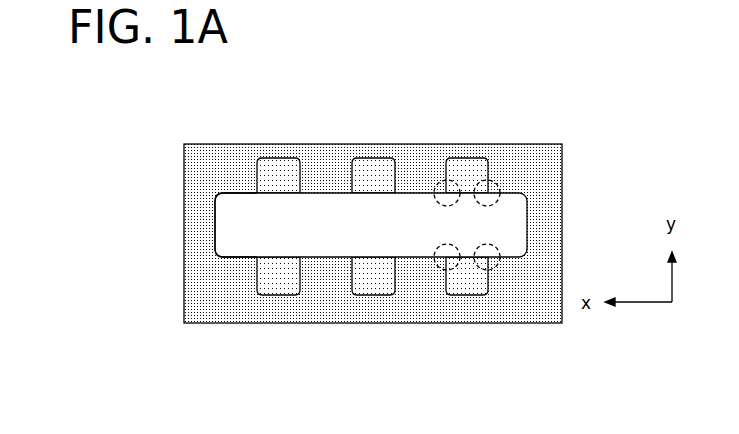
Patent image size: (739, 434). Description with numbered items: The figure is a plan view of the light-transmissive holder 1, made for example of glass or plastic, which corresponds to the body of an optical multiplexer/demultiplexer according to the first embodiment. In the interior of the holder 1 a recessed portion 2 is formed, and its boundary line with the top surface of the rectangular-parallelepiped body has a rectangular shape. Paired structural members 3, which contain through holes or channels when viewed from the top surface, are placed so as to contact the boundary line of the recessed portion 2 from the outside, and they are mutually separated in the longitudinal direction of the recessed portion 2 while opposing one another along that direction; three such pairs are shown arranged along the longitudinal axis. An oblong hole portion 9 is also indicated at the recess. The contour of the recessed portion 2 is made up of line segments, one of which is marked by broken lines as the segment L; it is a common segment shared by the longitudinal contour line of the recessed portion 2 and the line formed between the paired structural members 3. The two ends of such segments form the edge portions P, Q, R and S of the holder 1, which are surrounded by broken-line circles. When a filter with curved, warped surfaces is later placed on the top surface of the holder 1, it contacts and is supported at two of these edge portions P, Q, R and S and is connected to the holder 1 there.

The holder 1 is at (389, 203).
The recessed portion 2 is at (310, 215).
The paired structural member 3 is at (372, 170).
The oblong hole portion 9 is at (183, 225).
The edge portion R is at (439, 122).
The edge portion Q is at (478, 122).
The edge portion S is at (451, 328).
The edge portion P is at (495, 331).
The line segment L is at (490, 220).